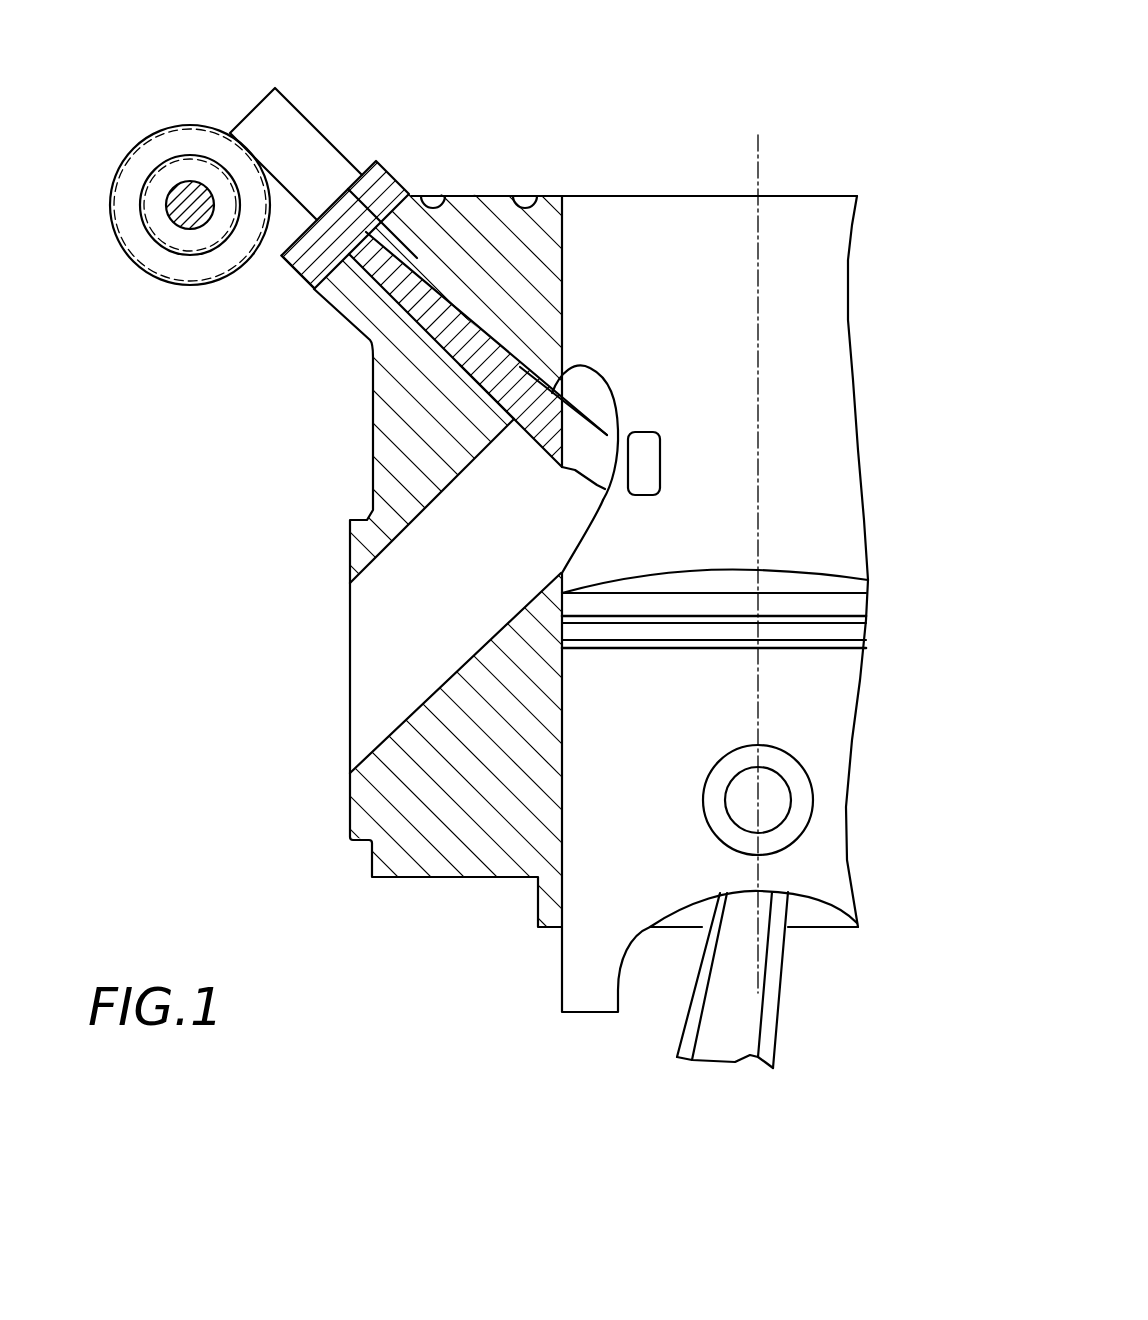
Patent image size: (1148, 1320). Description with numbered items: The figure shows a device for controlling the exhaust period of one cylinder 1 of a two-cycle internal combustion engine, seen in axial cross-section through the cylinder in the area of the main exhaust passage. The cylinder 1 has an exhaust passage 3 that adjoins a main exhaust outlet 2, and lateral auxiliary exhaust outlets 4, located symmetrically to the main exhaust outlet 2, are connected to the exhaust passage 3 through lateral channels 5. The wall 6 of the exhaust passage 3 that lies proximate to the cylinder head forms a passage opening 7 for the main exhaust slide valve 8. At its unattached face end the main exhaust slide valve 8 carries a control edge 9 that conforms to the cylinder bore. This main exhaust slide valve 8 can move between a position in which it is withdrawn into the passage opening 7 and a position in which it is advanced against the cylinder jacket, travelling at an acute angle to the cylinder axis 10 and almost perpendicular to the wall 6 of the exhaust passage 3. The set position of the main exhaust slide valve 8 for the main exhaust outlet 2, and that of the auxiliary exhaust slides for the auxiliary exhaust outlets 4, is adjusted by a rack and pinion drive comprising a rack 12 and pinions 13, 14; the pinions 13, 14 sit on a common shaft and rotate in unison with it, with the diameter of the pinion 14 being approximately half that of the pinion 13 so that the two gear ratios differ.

The cylinder 1 is at (828, 417).
The main exhaust outlet 2 is at (600, 510).
The exhaust passage 3 is at (402, 665).
The lateral auxiliary exhaust outlets 4 is at (651, 432).
The lateral channels 5 is at (641, 460).
The wall of the exhaust passage 6 is at (508, 428).
The passage opening 7 is at (550, 414).
The main exhaust slide valve 8 is at (388, 260).
The control edge 9 is at (607, 440).
The cylinder axis 10 is at (758, 160).
The rack 12 is at (281, 237).
The pinion 13 is at (152, 148).
The pinion 14 is at (185, 178).